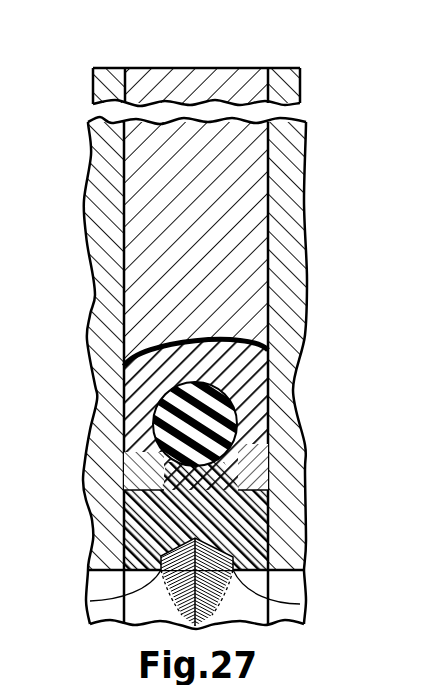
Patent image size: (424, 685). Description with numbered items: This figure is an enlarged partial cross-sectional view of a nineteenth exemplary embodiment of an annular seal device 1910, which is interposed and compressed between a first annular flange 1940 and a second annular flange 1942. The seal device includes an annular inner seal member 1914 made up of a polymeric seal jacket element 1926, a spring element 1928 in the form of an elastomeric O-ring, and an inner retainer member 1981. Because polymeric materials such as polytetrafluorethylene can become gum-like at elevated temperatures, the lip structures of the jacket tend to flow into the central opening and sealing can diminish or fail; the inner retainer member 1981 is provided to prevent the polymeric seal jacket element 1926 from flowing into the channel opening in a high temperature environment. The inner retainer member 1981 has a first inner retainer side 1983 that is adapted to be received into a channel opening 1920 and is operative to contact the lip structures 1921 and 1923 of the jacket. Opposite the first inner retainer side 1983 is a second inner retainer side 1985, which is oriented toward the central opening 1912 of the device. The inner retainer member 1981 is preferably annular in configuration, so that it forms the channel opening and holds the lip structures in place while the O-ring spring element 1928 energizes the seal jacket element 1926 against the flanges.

The annular seal device 1910 is at (236, 56).
The first annular flange 1940 is at (105, 292).
The second annular flange 1942 is at (288, 204).
The annular inner seal member 1914 is at (258, 334).
The polymeric seal jacket element 1926 is at (250, 378).
The spring element 1928 is at (240, 417).
The lip structure 1923 is at (268, 475).
The channel opening 1920 is at (135, 447).
The lip structure 1921 is at (135, 462).
The first inner retainer side 1983 is at (155, 485).
The second inner retainer side 1985 is at (90, 601).
The inner retainer member 1981 is at (300, 604).
The central opening 1912 is at (185, 594).